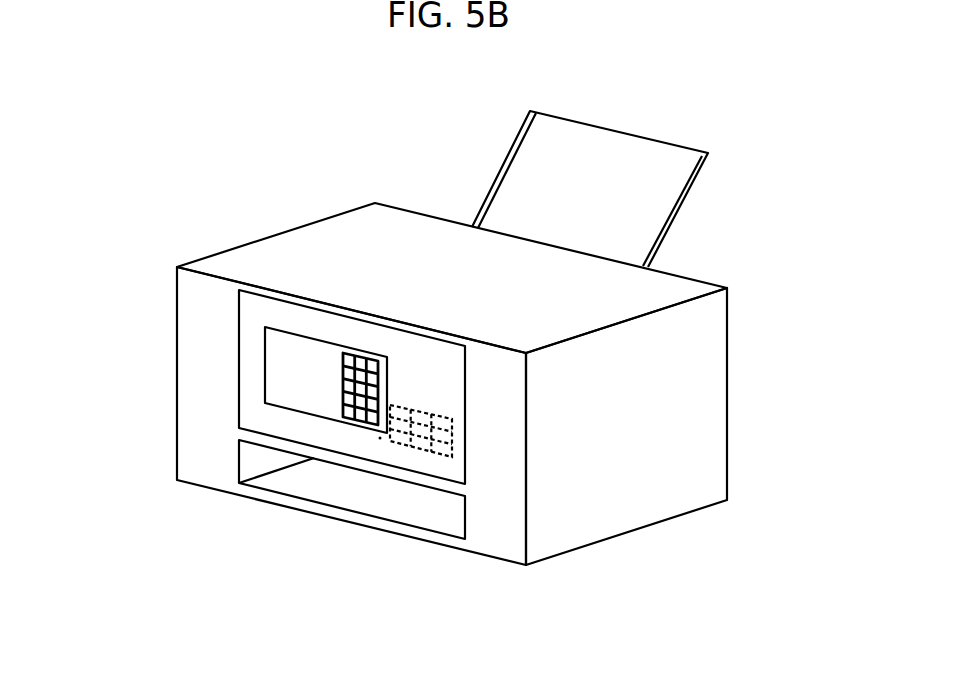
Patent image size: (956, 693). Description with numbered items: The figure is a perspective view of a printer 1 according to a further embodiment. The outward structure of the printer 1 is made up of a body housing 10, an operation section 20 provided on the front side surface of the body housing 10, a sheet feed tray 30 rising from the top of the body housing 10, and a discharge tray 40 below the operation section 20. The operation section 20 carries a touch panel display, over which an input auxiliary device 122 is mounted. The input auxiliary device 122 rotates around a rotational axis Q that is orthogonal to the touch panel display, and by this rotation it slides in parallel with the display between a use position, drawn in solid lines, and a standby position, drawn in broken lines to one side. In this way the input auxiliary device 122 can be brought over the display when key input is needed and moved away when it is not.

The printer 1 is at (331, 78).
The body housing 10 is at (486, 384).
The operation section 20 is at (289, 387).
The sheet feed tray 30 is at (541, 189).
The discharge tray 40 is at (283, 465).
The input auxiliary device 122 is at (450, 389).
The rotational axis Q is at (332, 509).